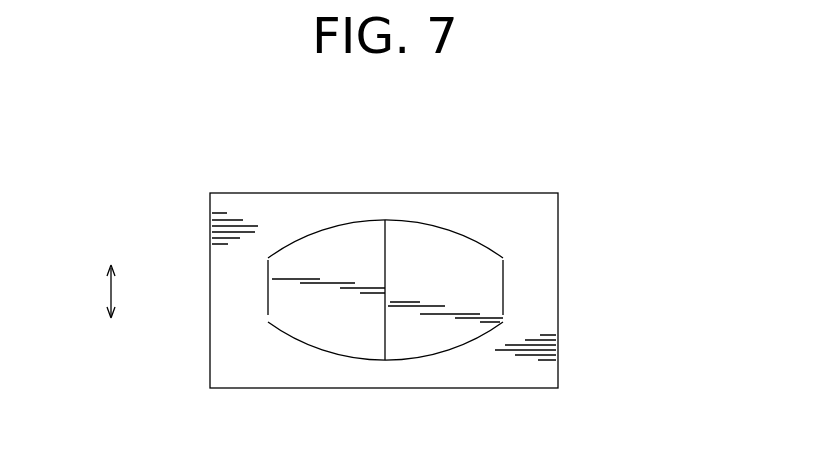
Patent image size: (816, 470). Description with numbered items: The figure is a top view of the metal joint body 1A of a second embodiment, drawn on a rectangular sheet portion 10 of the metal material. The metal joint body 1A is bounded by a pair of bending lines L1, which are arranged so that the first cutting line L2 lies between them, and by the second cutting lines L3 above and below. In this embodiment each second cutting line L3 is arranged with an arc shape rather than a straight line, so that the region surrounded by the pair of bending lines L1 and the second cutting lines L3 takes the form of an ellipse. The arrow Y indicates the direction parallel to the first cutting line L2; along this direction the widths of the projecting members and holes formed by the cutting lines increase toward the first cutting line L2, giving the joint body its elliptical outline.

The metal joint body 1A is at (421, 279).
The housing 10 is at (514, 208).
The bending lines L1 is at (268, 294).
The first cutting line L2 is at (385, 270).
The second cutting line L3 is at (338, 223).
The arrow Y is at (110, 283).